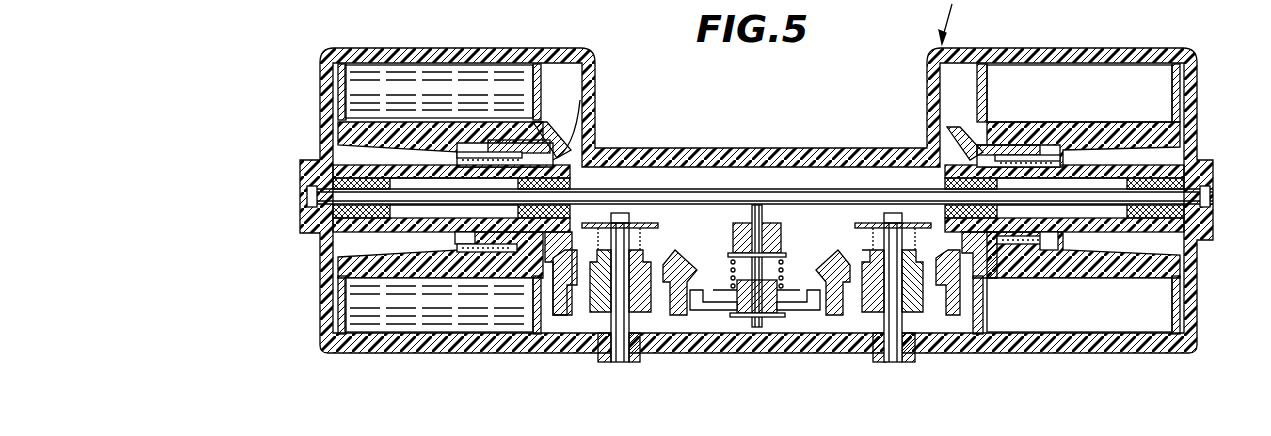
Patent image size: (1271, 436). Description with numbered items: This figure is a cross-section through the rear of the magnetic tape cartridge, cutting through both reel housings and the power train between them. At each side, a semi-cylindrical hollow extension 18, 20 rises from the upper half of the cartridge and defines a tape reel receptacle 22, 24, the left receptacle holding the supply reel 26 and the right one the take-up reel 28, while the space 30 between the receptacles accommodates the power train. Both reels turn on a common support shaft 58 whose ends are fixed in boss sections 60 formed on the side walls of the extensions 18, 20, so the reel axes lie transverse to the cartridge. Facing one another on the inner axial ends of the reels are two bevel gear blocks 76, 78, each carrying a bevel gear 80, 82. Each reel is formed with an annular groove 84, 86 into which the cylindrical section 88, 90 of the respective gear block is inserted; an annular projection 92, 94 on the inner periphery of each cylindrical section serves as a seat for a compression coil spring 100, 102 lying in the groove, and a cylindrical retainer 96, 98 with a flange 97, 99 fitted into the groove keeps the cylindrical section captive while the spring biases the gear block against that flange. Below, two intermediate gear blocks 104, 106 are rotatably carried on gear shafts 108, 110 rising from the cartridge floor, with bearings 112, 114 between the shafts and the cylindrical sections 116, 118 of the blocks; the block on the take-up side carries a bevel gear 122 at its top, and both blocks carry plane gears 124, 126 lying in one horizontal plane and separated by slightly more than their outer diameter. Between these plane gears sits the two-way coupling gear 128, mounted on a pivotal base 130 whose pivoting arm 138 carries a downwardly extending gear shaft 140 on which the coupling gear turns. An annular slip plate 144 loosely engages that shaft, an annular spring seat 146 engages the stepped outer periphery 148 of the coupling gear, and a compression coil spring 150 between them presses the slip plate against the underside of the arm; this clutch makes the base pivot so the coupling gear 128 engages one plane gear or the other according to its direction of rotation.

The semi-cylindrical hollow extension 18 is at (1063, 56).
The semi-cylindrical hollow extension 20 is at (514, 53).
The tape reel receptacle 22 is at (1123, 80).
The tape reel receptacle 24 is at (560, 77).
The supply reel 26 is at (1196, 140).
The take-up reel 28 is at (321, 140).
The space for power train 30 is at (718, 160).
The support shaft 58 is at (612, 192).
The boss section 60 is at (308, 228).
The bevel gear block 76 is at (973, 128).
The bevel gear block 78 is at (573, 68).
The bevel gear 80 is at (952, 140).
The bevel gear 82 is at (570, 90).
The annular groove 84 is at (1048, 148).
The annular groove 86 is at (461, 150).
The cylindrical section 88 is at (1000, 143).
The cylindrical section 90 is at (492, 152).
The annular projection 92 is at (952, 150).
The annular projection 94 is at (562, 112).
The cylindrical retainer 96 is at (1050, 258).
The flange 97 is at (977, 267).
The cylindrical retainer 98 is at (468, 236).
The flange 99 is at (553, 250).
The compression coil spring 100 is at (1045, 232).
The compression coil spring 102 is at (480, 253).
The intermediate gear block 104 is at (850, 313).
The intermediate gear block 106 is at (658, 312).
The gear shaft 108 is at (903, 358).
The gear shaft 110 is at (618, 362).
The bearing 112 is at (878, 362).
The bearing 114 is at (638, 330).
The cylindrical section 116 is at (930, 265).
The cylindrical section 118 is at (590, 285).
The bevel gear 122 is at (676, 255).
The plane gear 124 is at (840, 320).
The plane gear 126 is at (693, 312).
The two-way coupling gear 128 is at (762, 320).
The pivotal base 130 is at (733, 240).
The pivoting arm 138 is at (770, 225).
The gear shaft 140 is at (757, 215).
The annular slip plate 144 is at (786, 262).
The spring seat 146 is at (788, 288).
The stepped outer periphery 148 is at (787, 320).
The compression coil spring 150 is at (722, 312).